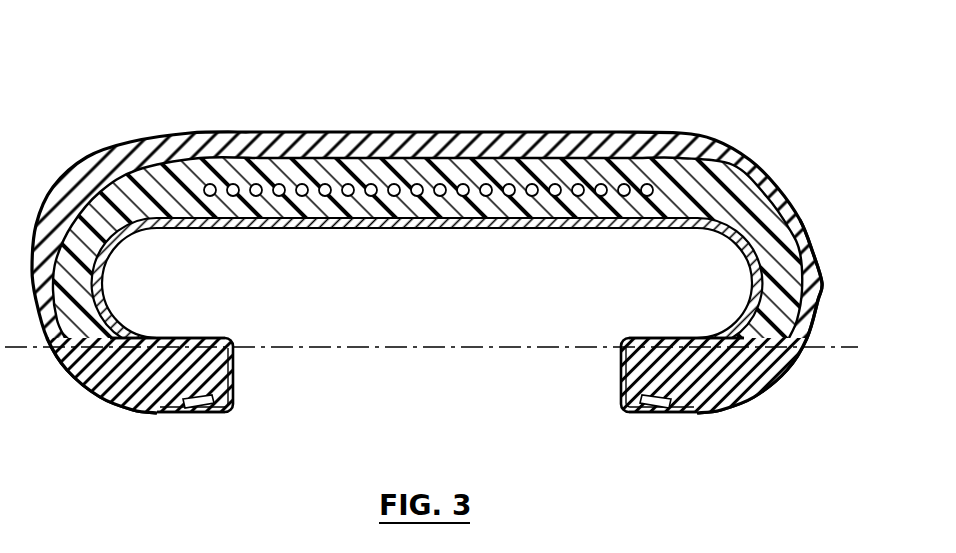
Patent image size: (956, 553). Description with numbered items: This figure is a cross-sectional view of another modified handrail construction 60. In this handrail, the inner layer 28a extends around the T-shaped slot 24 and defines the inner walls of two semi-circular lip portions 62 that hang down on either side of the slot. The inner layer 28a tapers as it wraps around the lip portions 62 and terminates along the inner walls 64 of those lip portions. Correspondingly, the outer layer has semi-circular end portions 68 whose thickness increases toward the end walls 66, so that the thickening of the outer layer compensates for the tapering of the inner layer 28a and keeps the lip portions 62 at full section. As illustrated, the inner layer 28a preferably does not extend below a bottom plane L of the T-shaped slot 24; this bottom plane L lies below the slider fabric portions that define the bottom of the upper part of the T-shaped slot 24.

The modified handrail construction 60 is at (712, 92).
The T-shaped slot 24 is at (449, 309).
The semi-circular lip portions 62 is at (57, 362).
The inner walls 64 is at (192, 338).
The end walls 66 is at (233, 379).
The semi-circular end portions 68 is at (118, 407).
The inner layer 28a is at (808, 337).
The bottom plane L is at (474, 347).